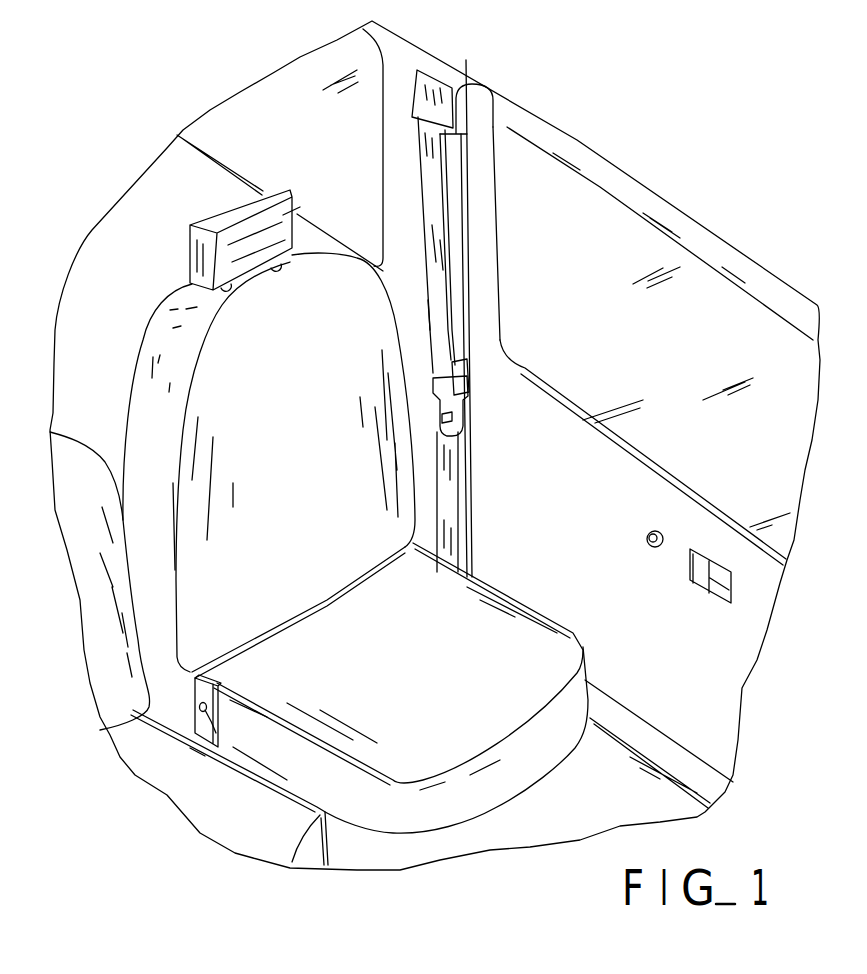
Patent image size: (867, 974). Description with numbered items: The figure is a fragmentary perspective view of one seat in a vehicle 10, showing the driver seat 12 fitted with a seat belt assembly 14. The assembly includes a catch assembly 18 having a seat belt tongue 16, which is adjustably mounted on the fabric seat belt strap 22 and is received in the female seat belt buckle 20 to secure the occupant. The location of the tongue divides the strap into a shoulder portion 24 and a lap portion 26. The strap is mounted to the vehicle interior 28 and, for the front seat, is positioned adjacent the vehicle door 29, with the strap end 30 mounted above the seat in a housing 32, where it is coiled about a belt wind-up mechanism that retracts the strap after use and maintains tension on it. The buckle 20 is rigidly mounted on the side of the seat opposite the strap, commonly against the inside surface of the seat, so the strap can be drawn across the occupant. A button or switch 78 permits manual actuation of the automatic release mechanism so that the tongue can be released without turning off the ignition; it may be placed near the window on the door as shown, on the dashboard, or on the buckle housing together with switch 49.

The vehicle 10 is at (727, 207).
The driver seat 12 is at (152, 286).
The seat belt assembly 14 is at (456, 65).
The seat belt tongue 16 is at (460, 424).
The catch assembly 18 is at (472, 378).
The seat belt buckle 20 is at (217, 715).
The seat belt strap 22 is at (455, 223).
The shoulder portion 24 is at (443, 281).
The lap portion 26 is at (450, 494).
The vehicle interior 28 is at (397, 63).
The vehicle door 29 is at (734, 673).
The seat belt strap end 30 is at (458, 134).
The housing 32 is at (451, 105).
The switch 49 is at (217, 733).
The switch 78 is at (656, 533).